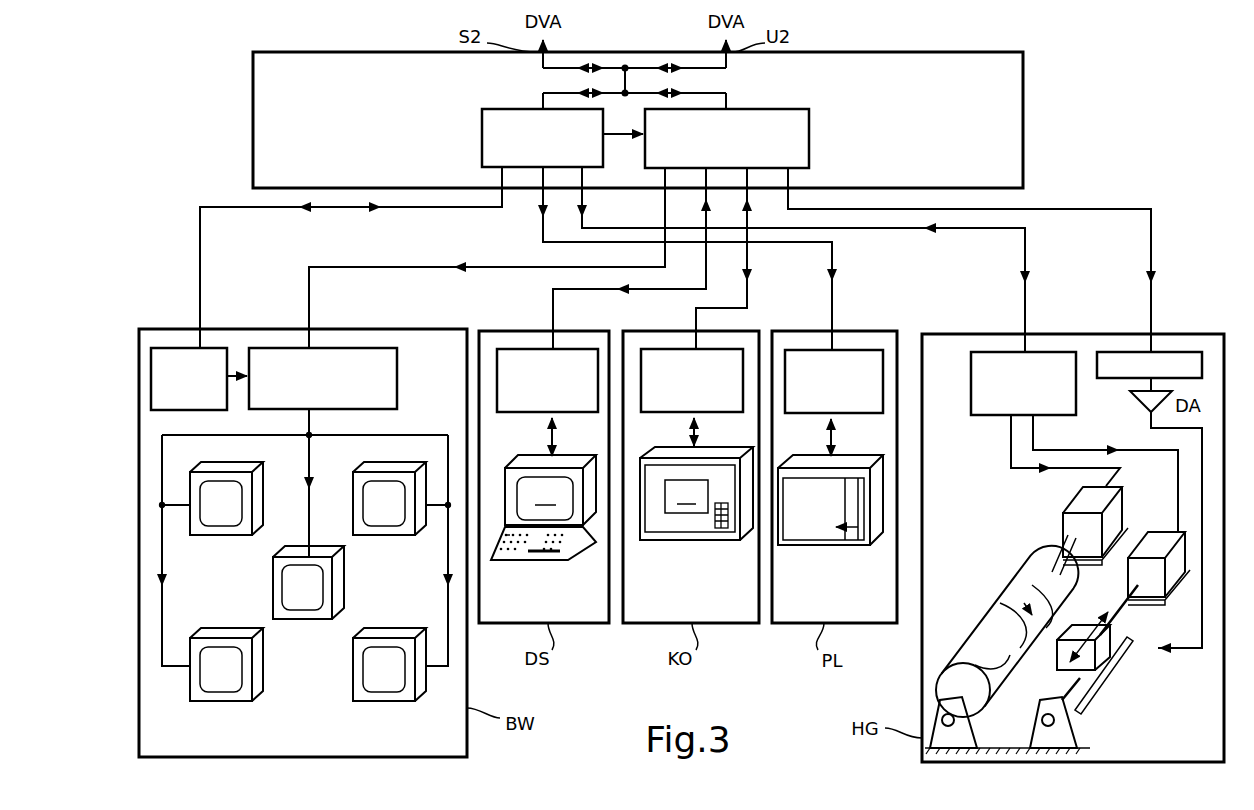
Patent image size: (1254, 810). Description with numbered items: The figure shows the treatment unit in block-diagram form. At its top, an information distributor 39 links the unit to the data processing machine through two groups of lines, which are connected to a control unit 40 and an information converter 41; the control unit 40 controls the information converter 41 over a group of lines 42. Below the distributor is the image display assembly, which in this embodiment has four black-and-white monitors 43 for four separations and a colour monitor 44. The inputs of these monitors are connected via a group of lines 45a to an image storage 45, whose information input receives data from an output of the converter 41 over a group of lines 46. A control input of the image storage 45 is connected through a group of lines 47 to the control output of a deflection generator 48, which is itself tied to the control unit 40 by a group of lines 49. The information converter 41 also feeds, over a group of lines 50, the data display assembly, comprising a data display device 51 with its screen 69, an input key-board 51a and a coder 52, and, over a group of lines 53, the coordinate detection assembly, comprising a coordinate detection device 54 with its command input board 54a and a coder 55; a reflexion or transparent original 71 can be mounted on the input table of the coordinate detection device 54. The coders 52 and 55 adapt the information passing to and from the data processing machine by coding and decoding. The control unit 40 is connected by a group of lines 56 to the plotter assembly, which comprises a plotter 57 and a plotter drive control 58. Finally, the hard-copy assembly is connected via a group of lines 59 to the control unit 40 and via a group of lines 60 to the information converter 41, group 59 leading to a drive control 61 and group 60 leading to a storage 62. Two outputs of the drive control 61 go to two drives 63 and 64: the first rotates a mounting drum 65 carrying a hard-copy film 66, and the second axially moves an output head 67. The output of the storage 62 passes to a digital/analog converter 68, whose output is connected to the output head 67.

The information distributor 39 is at (1023, 134).
The control unit 40 is at (482, 134).
The information converter 41 is at (809, 134).
The group of lines 42 is at (622, 134).
The black-and-white monitors 43 is at (235, 462).
The colour monitor 44 is at (273, 565).
The image storage 45 is at (385, 409).
The group of lines 45a is at (327, 436).
The group of lines 46 is at (402, 268).
The group of lines 47 is at (233, 372).
The deflection generator 48 is at (215, 410).
The group of lines 49 is at (338, 208).
The group of lines 50 is at (552, 302).
The data display device 51 is at (596, 545).
The input key-board 51a is at (505, 535).
The coder 52 is at (505, 412).
The group of lines 53 is at (695, 318).
The coordinate detection device 54 is at (652, 540).
The command input board 54a is at (722, 528).
The coder 55 is at (650, 412).
The group of lines 56 is at (833, 305).
The plotter 57 is at (820, 545).
The plotter drive control 58 is at (855, 413).
The group of lines 59 is at (1024, 305).
The group of lines 60 is at (1150, 298).
The drive control 61 is at (985, 415).
The storage 62 is at (1196, 352).
The drive 63 is at (1063, 512).
The drive 64 is at (1150, 532).
The mounting drum 65 is at (950, 648).
The recording film 66 is at (995, 610).
The output head 67 is at (1078, 625).
The digital/analog converter 68 is at (1138, 401).
The screen 69 is at (545, 495).
The reflexion or transparent original 71 is at (686, 496).